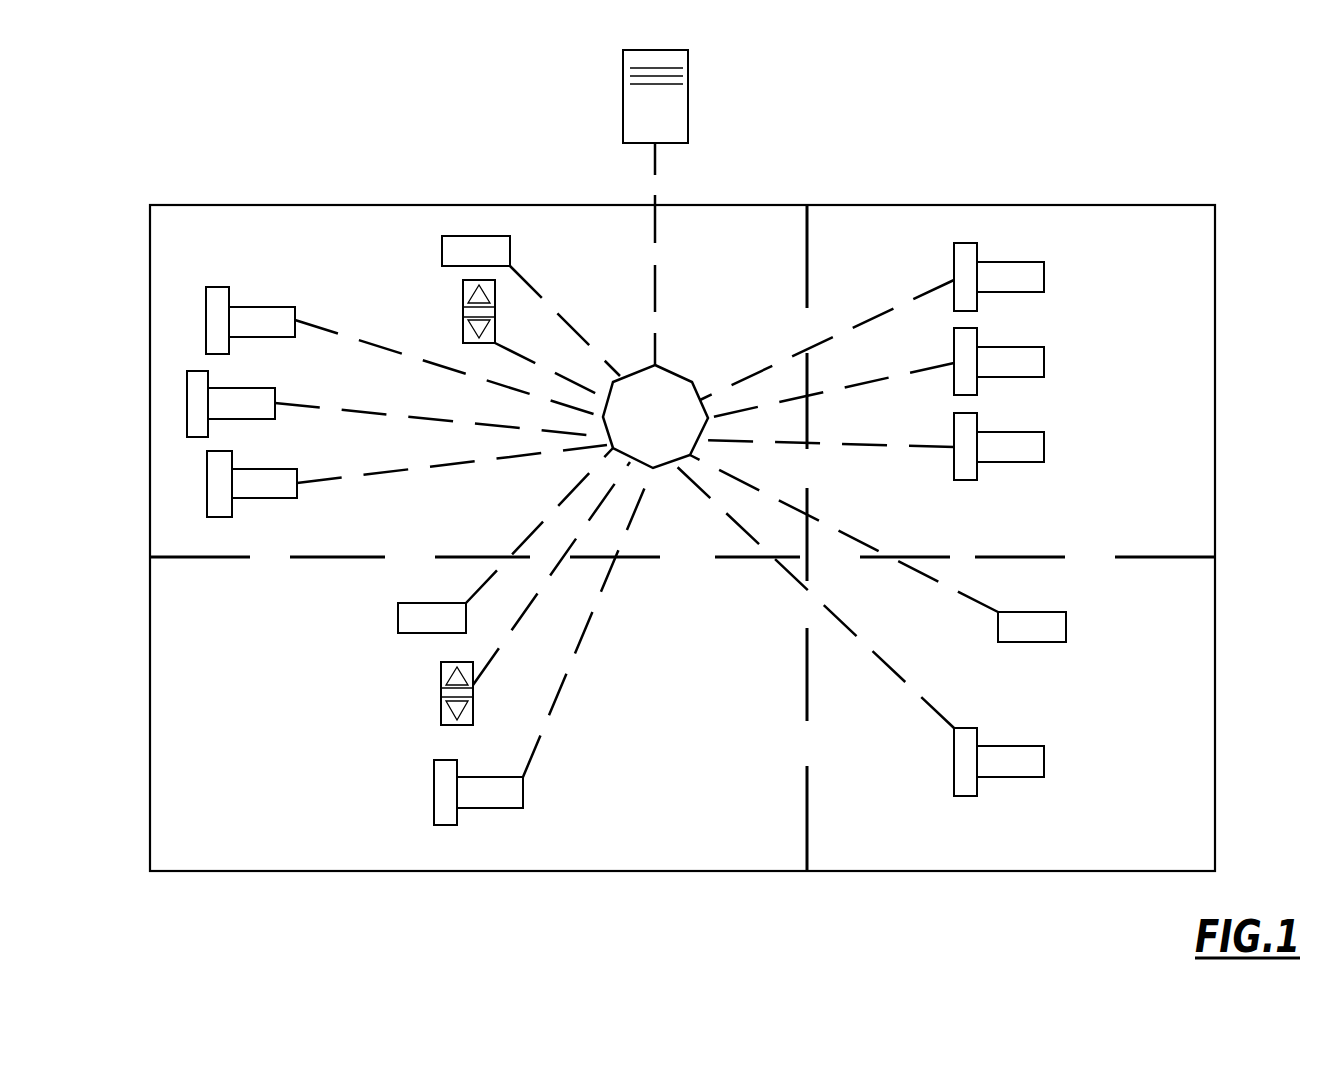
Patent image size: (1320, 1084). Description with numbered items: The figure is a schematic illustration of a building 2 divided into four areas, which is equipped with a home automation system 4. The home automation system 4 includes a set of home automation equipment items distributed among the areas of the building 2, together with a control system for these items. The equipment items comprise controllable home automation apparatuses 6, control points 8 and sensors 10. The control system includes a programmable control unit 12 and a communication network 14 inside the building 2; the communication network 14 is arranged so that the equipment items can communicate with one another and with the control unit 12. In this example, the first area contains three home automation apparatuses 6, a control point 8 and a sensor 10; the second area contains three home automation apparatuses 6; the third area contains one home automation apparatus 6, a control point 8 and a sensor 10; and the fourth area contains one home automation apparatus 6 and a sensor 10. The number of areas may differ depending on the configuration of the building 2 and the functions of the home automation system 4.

The building 2 is at (1215, 230).
The home automation system 4 is at (1150, 167).
The home automation apparatus 6 is at (220, 327).
The control point 8 is at (470, 312).
The sensor 10 is at (450, 251).
The control unit 12 is at (637, 127).
The communication network 14 is at (687, 398).